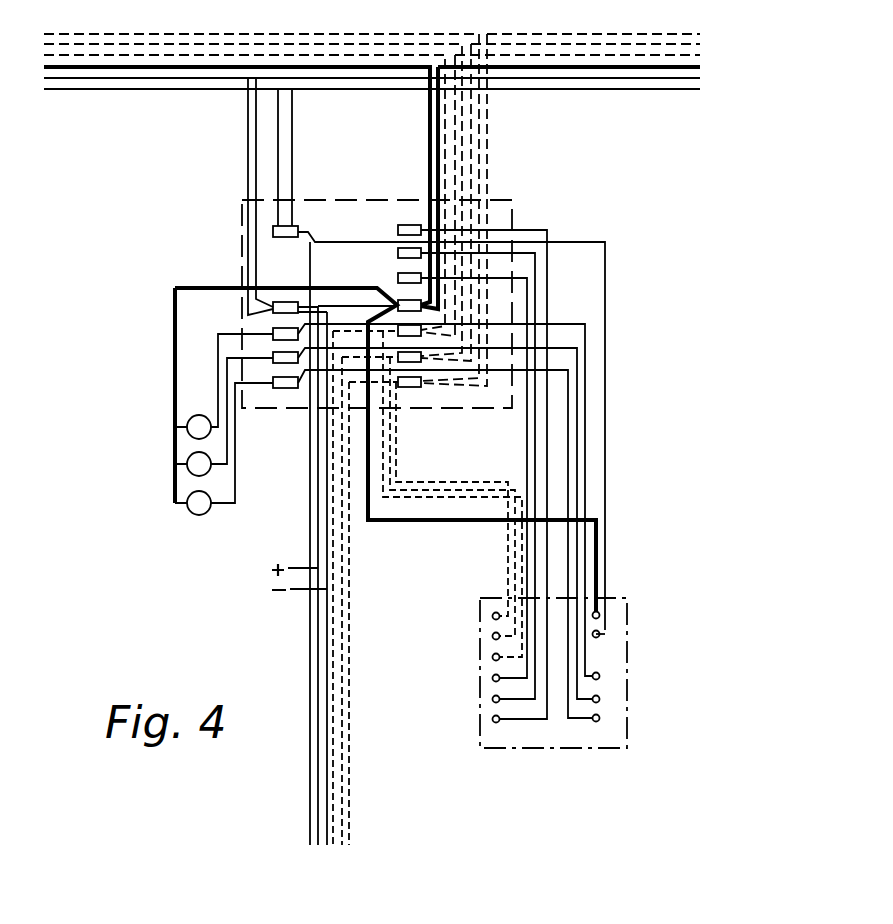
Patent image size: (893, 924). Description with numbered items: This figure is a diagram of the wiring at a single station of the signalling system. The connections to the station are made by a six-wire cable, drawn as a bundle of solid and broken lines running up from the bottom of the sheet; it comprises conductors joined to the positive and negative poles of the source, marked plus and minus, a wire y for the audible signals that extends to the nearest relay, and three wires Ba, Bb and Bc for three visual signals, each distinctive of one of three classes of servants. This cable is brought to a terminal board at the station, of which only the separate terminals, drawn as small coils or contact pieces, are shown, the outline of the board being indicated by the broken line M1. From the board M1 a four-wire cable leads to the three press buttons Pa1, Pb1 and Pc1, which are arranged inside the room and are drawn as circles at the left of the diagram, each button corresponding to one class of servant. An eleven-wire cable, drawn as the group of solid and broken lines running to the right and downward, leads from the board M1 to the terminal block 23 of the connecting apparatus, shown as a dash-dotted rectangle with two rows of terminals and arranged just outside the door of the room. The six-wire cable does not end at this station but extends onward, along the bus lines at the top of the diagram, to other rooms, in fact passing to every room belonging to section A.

The press button Pa1 is at (197, 386).
The press button Pb1 is at (197, 417).
The press button Pc1 is at (197, 449).
The terminal board M1 is at (441, 408).
The terminal block 23 is at (628, 656).
The section A is at (322, 567).
The wire for visual signal Ba is at (337, 617).
The wire for visual signal Bb is at (343, 642).
The wire for visual signal Bc is at (350, 668).
The wire for the audible signals y is at (311, 618).